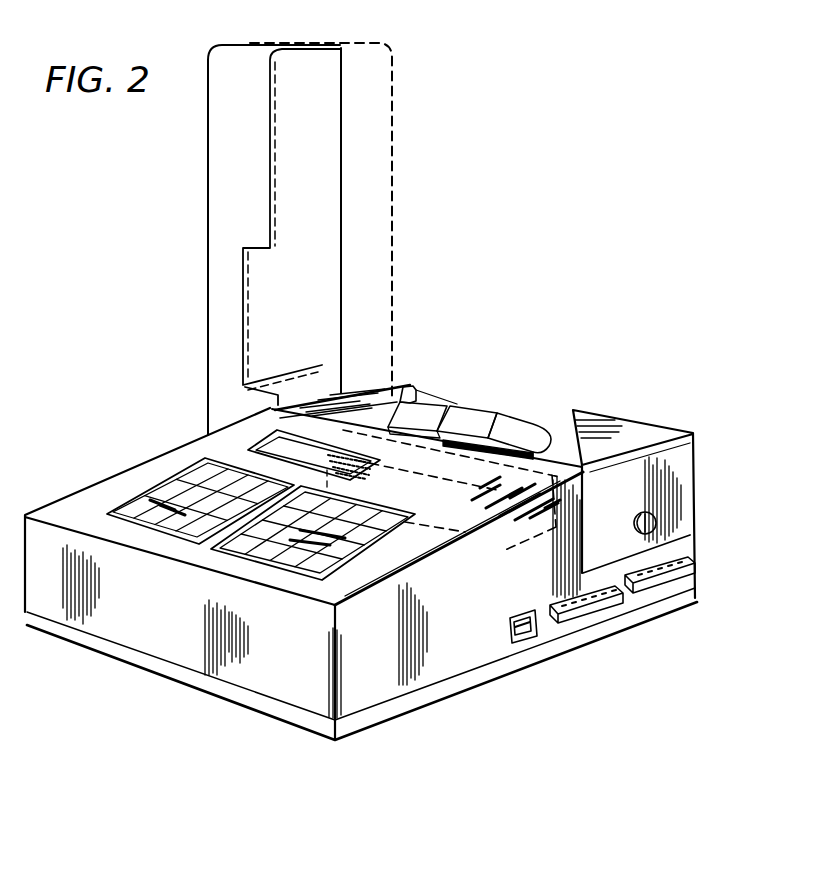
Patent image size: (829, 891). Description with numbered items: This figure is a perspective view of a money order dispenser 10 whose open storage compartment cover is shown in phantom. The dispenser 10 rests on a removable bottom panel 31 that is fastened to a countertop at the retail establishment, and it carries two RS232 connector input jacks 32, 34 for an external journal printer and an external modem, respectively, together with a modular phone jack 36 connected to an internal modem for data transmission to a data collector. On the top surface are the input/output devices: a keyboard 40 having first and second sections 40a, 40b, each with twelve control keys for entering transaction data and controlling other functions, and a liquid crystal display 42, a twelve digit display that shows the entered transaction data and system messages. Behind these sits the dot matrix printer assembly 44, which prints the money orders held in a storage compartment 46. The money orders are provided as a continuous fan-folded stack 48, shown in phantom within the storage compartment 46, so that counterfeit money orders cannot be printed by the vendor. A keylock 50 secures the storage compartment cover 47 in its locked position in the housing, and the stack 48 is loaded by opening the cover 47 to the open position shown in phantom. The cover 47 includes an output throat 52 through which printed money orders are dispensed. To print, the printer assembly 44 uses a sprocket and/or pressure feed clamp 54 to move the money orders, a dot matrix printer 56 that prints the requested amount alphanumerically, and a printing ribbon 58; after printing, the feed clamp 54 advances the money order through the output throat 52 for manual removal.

The money order dispenser 10 is at (126, 724).
The removable bottom panel 31 is at (460, 693).
The RS232 connector input jack 32 is at (600, 604).
The RS232 connector input jack 34 is at (670, 590).
The modular phone jack 36 is at (527, 643).
The keyboard 40 is at (253, 534).
The first section of keyboard 40a is at (178, 498).
The second section of keyboard 40b is at (396, 520).
The liquid crystal display 42 is at (293, 456).
The dot matrix printer assembly 44 is at (486, 392).
The storage compartment 46 is at (560, 440).
The storage compartment cover 47 is at (690, 428).
The fan-folded stack of money orders 48 is at (503, 551).
The keylock 50 is at (657, 523).
The output throat 52 is at (286, 368).
The sprocket and/or pressure feed clamp 54 is at (497, 411).
The dot matrix printer 56 is at (456, 401).
The printing ribbon 58 is at (413, 388).